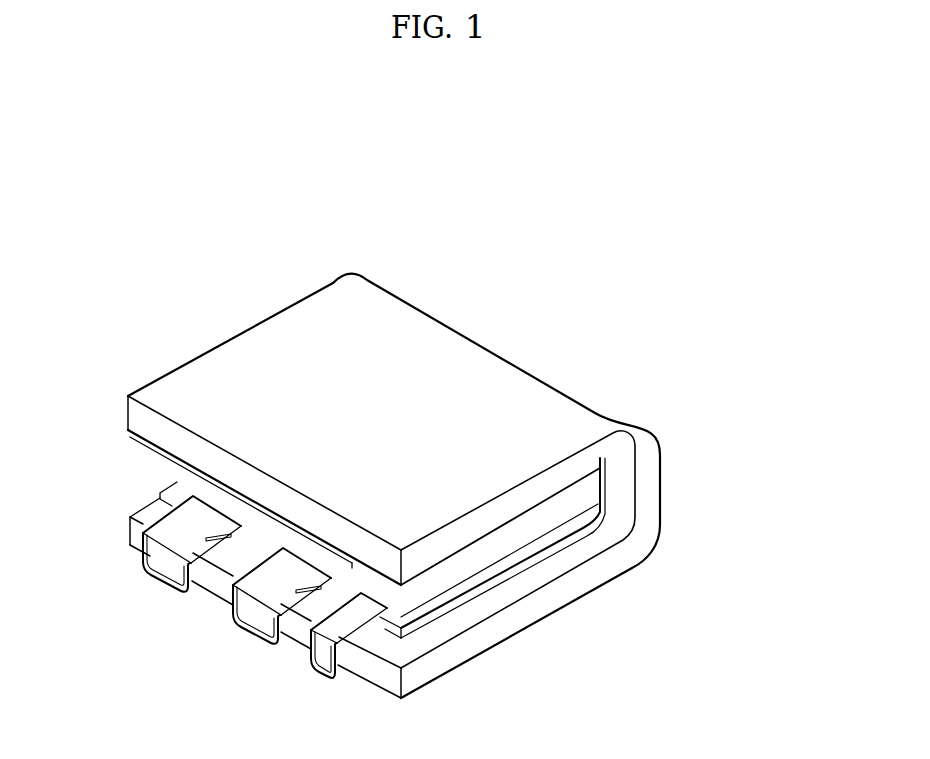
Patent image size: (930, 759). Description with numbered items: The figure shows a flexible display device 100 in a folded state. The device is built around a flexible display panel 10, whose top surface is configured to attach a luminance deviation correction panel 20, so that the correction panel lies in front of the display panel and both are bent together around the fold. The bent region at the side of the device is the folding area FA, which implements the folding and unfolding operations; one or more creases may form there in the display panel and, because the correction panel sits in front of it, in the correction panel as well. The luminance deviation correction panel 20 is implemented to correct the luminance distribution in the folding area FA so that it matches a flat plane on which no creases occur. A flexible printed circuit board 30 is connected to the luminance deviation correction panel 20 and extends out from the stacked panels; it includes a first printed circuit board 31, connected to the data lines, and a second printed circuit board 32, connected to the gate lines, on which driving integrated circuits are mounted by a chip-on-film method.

The flexible display device 100 is at (457, 148).
The flexible display panel 10 is at (580, 587).
The luminance deviation correction panel 20 is at (484, 565).
The flexible printed circuit board 30 is at (265, 620).
The first printed circuit board 31 is at (322, 662).
The second printed circuit board 32 is at (265, 594).
The folding area FA is at (650, 555).